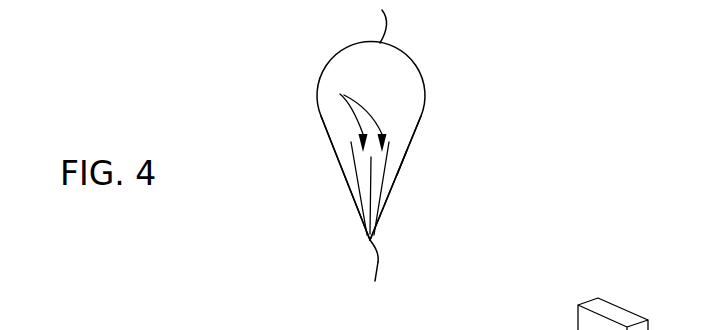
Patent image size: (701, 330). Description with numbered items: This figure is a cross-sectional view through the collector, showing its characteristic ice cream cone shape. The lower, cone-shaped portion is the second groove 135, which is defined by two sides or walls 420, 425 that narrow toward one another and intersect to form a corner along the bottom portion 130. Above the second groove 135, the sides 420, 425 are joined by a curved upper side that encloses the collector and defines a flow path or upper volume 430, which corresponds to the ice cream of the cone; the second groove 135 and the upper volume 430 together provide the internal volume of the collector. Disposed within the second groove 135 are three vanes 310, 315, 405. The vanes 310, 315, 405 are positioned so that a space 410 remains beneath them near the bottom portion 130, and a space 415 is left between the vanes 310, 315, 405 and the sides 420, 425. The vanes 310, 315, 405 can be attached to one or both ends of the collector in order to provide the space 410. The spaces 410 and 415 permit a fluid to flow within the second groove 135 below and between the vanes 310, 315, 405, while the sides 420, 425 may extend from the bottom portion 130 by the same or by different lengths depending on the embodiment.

The bottom portion 130 is at (374, 286).
The second groove 135 is at (410, 151).
The vane 310 is at (366, 205).
The vane 315 is at (370, 168).
The vane 405 is at (380, 197).
The space 410 is at (392, 232).
The space 415 is at (341, 94).
The side 420 is at (322, 131).
The side 425 is at (400, 175).
The upper volume 430 is at (405, 74).